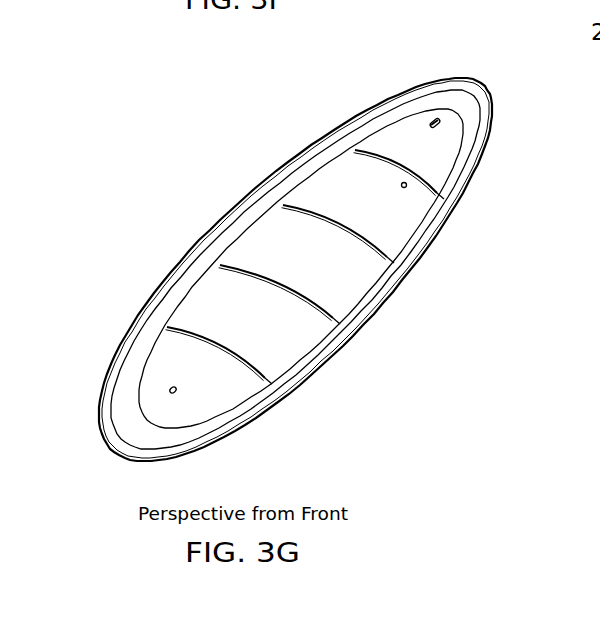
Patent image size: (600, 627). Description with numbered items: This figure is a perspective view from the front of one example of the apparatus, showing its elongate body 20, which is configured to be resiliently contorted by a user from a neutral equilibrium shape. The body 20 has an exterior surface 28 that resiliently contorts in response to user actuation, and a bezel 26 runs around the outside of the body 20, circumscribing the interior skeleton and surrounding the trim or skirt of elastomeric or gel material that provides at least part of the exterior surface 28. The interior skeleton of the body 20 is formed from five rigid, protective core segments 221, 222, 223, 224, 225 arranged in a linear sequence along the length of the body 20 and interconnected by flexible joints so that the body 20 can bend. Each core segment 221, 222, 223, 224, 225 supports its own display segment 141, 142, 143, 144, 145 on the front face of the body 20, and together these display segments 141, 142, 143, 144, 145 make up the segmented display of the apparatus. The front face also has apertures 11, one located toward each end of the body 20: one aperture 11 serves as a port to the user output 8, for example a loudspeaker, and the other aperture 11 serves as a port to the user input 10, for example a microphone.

The body 20 is at (429, 44).
The bezel 26 is at (477, 170).
The exterior surface 28 is at (453, 127).
The user output 8 is at (162, 390).
The user input 10 is at (438, 118).
The aperture 11 is at (427, 120).
The display segment 141 is at (392, 140).
The display segment 142 is at (333, 185).
The display segment 143 is at (272, 243).
The display segment 144 is at (212, 300).
The display segment 145 is at (160, 363).
The core segment 221 is at (432, 158).
The core segment 222 is at (377, 206).
The core segment 223 is at (319, 264).
The core segment 224 is at (259, 324).
The core segment 225 is at (202, 382).